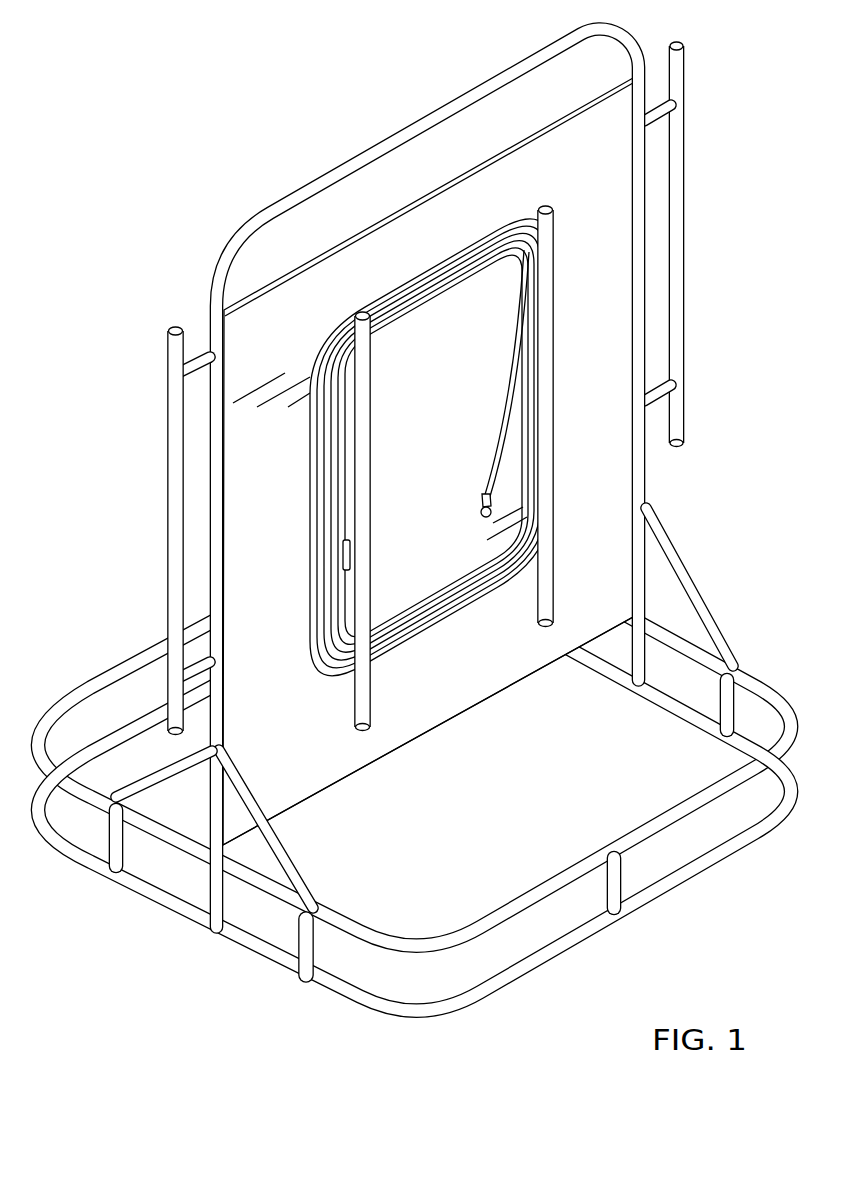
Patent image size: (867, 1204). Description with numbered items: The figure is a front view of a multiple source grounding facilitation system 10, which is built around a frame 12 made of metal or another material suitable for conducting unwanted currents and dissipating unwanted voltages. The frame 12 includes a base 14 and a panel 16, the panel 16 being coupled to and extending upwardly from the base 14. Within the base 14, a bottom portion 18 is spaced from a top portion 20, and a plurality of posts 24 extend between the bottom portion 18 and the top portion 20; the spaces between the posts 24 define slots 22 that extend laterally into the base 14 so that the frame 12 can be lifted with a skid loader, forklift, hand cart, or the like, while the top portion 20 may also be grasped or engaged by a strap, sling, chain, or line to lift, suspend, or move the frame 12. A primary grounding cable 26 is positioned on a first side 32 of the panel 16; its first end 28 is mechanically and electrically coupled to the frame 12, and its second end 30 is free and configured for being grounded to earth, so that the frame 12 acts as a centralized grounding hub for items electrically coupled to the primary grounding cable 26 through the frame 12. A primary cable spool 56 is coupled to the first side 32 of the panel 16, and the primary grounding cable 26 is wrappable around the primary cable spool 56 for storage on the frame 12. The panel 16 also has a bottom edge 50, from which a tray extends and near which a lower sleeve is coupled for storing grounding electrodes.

The multiple source grounding facilitation system 10 is at (419, 528).
The frame 12 is at (702, 497).
The base 14 is at (419, 781).
The panel 16 is at (367, 263).
The bottom portion 18 is at (763, 827).
The top portion 20 is at (715, 788).
The slots 22 is at (707, 830).
The posts 24 is at (310, 938).
The primary grounding cable 26 is at (317, 512).
The first end 28 is at (475, 518).
The second end 30 is at (344, 582).
The first side 32 is at (482, 200).
The bottom edge 50 is at (501, 693).
The primary cable spool 56 is at (548, 238).